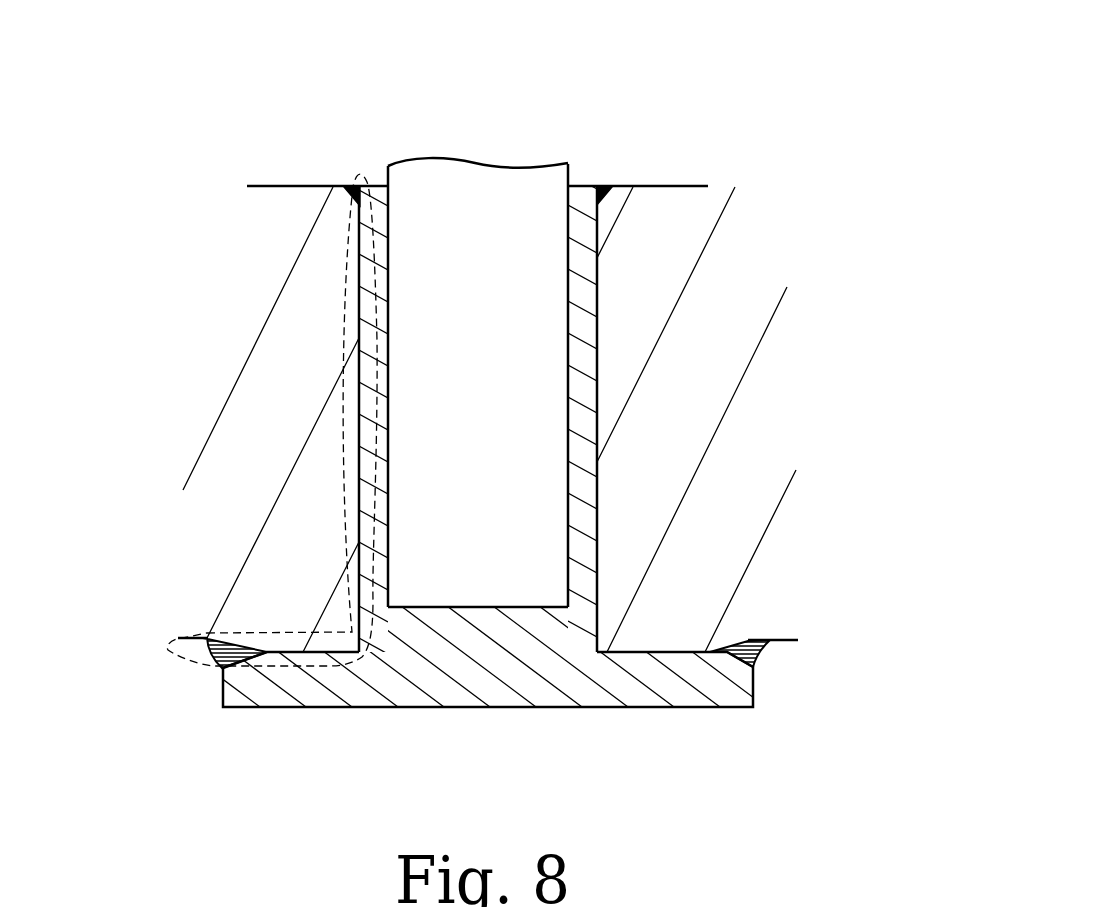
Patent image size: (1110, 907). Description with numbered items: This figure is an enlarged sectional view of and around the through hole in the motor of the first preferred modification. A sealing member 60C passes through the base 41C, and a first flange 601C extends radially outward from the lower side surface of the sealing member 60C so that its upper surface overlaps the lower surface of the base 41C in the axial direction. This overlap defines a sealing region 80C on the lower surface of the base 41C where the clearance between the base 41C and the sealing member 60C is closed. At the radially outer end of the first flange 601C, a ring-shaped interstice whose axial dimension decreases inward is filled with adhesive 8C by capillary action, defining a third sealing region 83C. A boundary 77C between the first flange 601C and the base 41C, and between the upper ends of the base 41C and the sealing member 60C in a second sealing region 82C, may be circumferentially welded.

The adhesive 8C is at (643, 187).
The base 41C is at (258, 393).
The sealing member 60C is at (457, 692).
The first flange 601C is at (303, 687).
The boundary 77C is at (361, 154).
The sealing region 80C is at (343, 449).
The second sealing region 82C is at (609, 169).
The third sealing region 83C is at (768, 619).